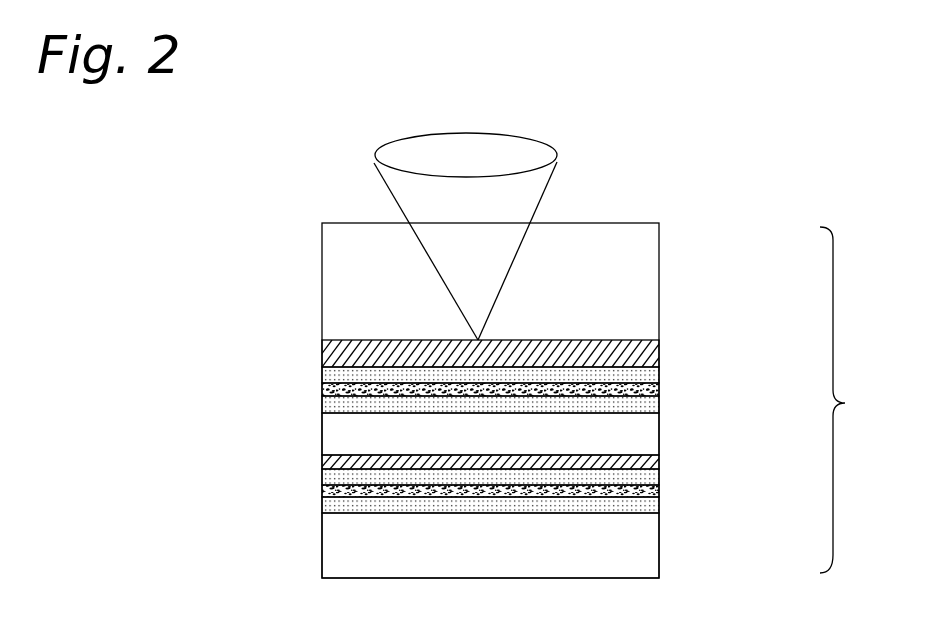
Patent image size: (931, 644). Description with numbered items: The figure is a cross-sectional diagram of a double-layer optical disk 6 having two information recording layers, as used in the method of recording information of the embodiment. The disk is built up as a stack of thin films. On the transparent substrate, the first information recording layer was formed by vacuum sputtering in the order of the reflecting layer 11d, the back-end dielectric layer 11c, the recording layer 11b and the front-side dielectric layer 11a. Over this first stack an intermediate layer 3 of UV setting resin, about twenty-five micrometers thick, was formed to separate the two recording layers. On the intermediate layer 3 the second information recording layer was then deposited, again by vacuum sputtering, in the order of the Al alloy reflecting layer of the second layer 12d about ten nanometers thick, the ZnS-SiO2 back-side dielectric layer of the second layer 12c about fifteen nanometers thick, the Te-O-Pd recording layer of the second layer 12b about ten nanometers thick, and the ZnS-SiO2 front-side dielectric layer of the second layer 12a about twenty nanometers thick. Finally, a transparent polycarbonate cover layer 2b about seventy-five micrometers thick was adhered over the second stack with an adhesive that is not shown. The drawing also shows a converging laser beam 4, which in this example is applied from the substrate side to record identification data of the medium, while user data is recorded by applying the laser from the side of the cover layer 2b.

The cover layer 2b is at (490, 545).
The intermediate layer 3 is at (490, 434).
The laser beam 4 is at (520, 197).
The optical disk 6 is at (846, 400).
The front-side dielectric layer 11a is at (650, 412).
The recording layer 11b is at (659, 392).
The back-end dielectric layer 11c is at (659, 377).
The reflecting layer 11d is at (659, 352).
The front-side dielectric layer of the second layer 12a is at (322, 505).
The recording layer of the second layer 12b is at (322, 490).
The back-side dielectric layer of the second layer 12c is at (322, 478).
The reflecting layer of the second layer 12d is at (322, 462).